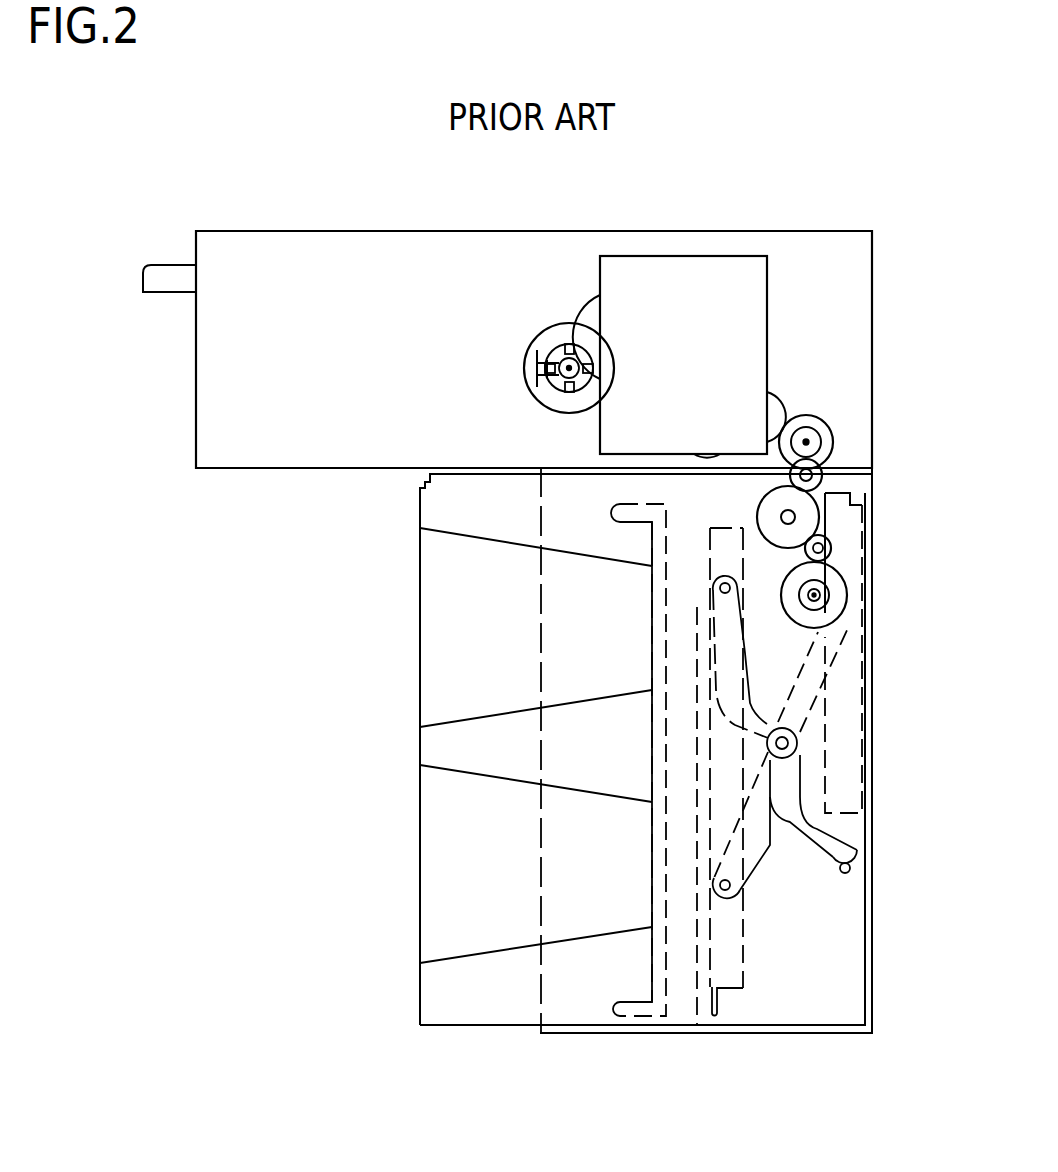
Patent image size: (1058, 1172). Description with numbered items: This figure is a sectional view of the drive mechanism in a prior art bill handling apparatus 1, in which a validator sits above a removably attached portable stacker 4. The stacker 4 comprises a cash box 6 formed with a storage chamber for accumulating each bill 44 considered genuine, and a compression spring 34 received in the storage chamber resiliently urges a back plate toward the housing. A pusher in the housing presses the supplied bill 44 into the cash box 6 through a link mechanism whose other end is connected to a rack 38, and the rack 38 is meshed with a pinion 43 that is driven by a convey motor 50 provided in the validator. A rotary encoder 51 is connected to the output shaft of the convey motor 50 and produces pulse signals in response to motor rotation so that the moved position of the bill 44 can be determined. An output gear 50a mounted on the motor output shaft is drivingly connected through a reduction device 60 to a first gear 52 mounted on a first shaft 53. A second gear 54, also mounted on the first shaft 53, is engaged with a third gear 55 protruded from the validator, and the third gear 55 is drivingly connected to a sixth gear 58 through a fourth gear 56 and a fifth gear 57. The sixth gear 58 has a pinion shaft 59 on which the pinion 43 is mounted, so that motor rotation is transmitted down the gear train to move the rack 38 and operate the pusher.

The bill handling apparatus 1 is at (287, 538).
The stacker 4 is at (407, 562).
The cash box 6 is at (420, 803).
The compression spring 34 is at (515, 950).
The rack 38 is at (850, 742).
The pinion 43 is at (808, 614).
The bill 44 is at (697, 845).
The convey motor 50 is at (523, 360).
The output gear 50a is at (564, 352).
The rotary encoder 51 is at (549, 392).
The first gear 52 is at (818, 421).
The first shaft 53 is at (812, 442).
The second gear 54 is at (823, 450).
The third gear 55 is at (820, 478).
The fourth gear 56 is at (807, 512).
The fifth gear 57 is at (828, 547).
The sixth gear 58 is at (838, 611).
The pinion shaft 59 is at (827, 595).
The reduction device 60 is at (768, 338).